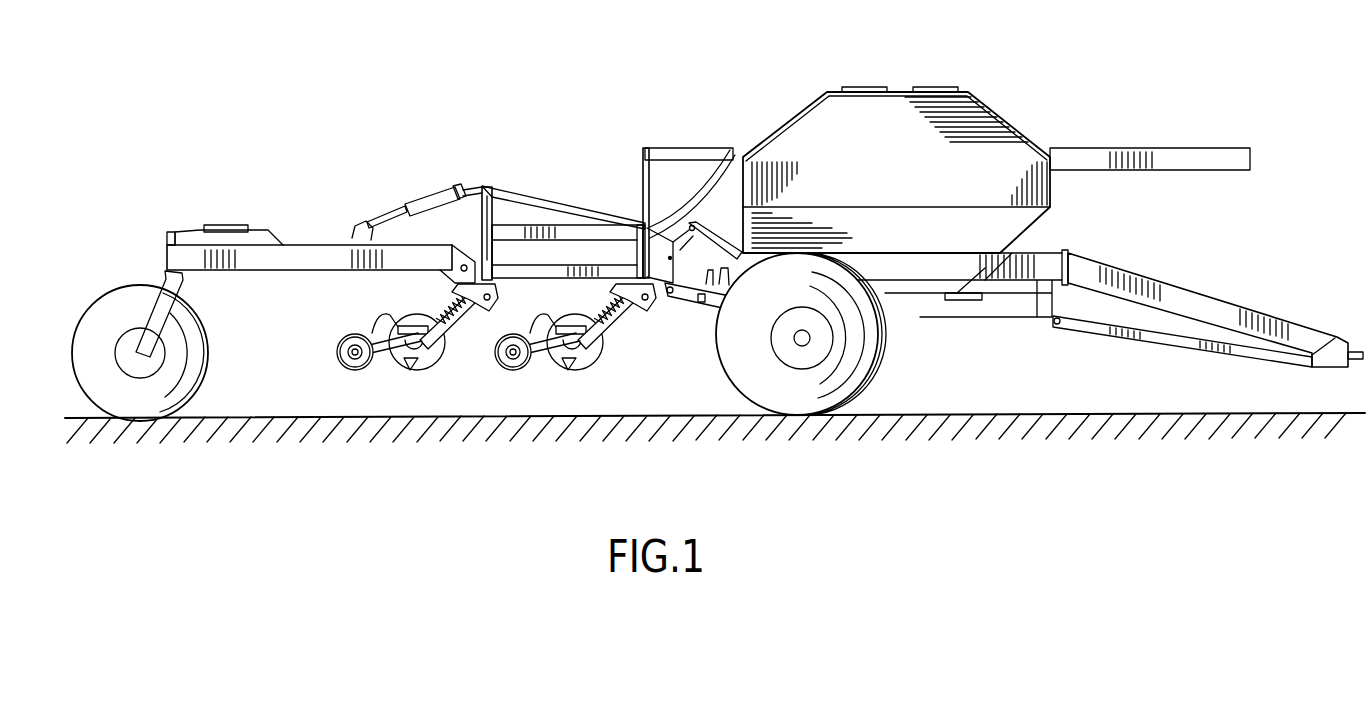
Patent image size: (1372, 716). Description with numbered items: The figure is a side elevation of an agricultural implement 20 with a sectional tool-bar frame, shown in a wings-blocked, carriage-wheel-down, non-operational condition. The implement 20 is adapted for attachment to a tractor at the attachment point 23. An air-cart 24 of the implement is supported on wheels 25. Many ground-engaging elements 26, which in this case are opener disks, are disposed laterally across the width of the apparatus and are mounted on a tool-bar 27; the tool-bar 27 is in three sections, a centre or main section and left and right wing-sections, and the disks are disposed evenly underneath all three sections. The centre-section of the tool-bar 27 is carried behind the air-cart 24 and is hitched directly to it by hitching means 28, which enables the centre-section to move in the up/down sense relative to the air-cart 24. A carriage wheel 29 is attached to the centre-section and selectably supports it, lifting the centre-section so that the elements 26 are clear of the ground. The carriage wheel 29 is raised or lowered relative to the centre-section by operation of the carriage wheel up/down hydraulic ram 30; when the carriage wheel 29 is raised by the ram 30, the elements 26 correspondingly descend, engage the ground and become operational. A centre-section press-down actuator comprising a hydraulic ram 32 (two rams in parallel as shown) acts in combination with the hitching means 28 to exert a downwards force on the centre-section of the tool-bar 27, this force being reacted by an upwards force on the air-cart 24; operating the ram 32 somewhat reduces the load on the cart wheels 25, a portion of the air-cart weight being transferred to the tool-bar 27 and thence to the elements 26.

The implement 20 is at (914, 68).
The attachment point 23 is at (1322, 313).
The air-cart 24 is at (997, 128).
The wheels 25 is at (866, 358).
The ground-engaging elements 26 is at (448, 350).
The tool-bar 27 is at (588, 228).
The hitching means 28 is at (681, 315).
The carriage wheel 29 is at (125, 300).
The carriage wheel up/down hydraulic ram 30 is at (425, 205).
The hydraulic ram 32 is at (727, 296).